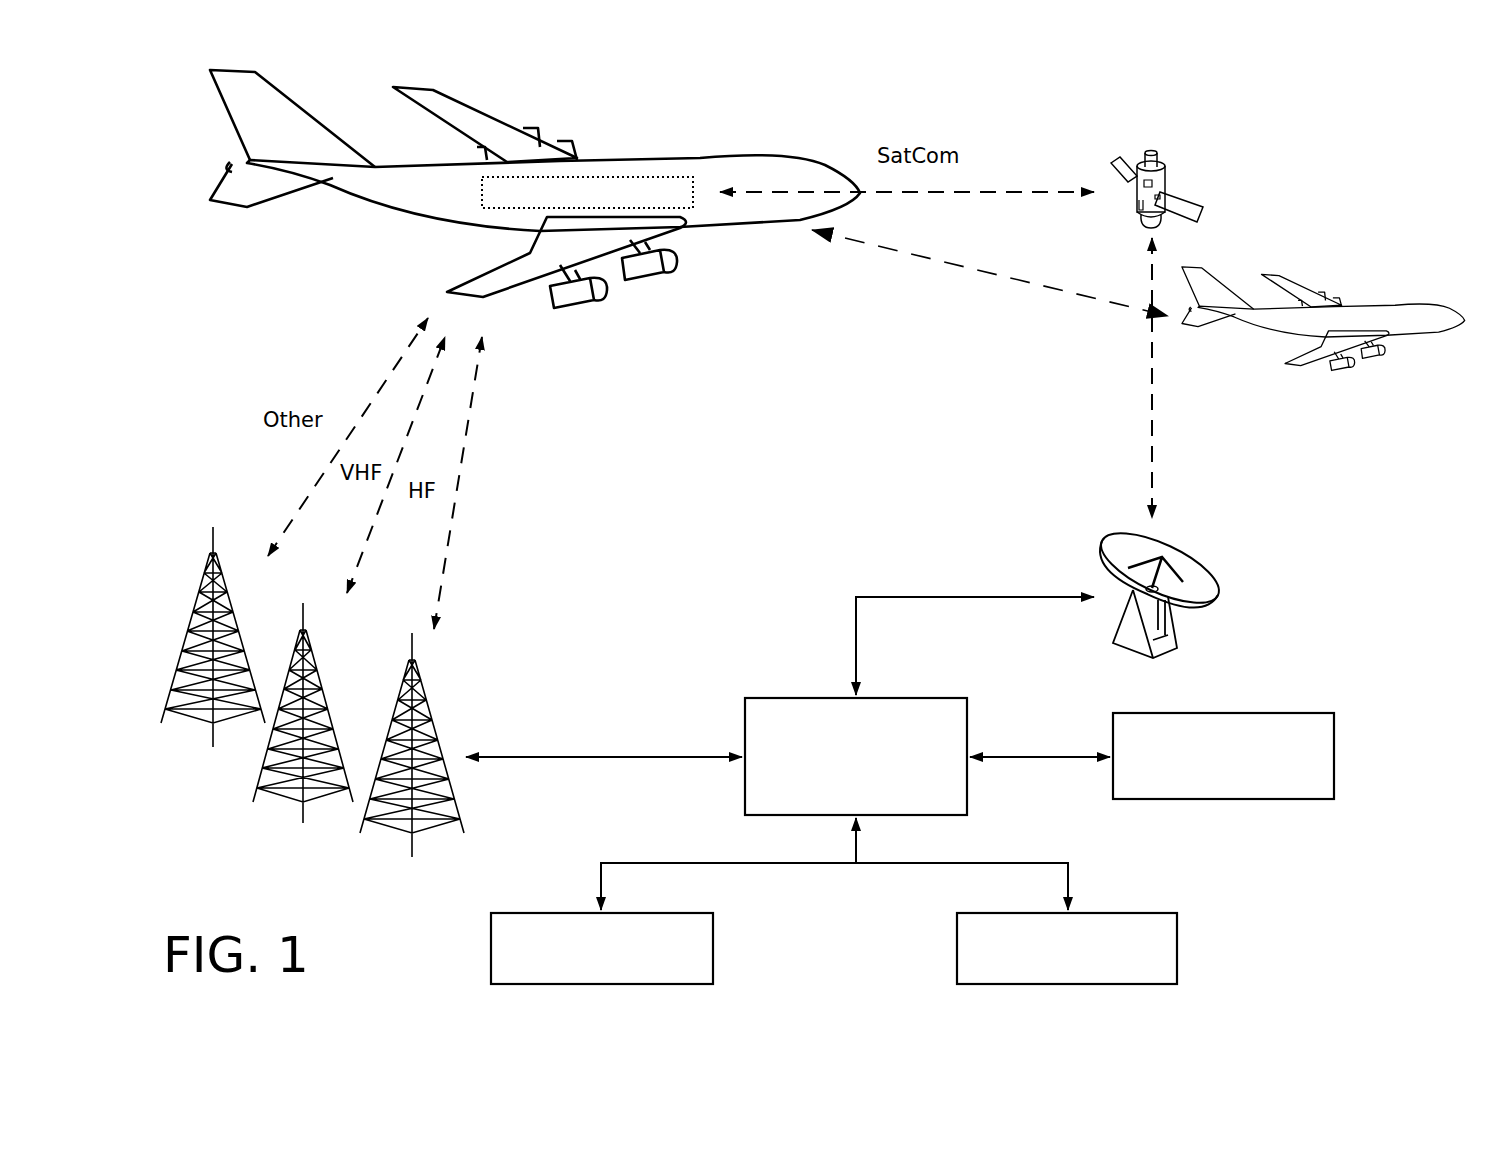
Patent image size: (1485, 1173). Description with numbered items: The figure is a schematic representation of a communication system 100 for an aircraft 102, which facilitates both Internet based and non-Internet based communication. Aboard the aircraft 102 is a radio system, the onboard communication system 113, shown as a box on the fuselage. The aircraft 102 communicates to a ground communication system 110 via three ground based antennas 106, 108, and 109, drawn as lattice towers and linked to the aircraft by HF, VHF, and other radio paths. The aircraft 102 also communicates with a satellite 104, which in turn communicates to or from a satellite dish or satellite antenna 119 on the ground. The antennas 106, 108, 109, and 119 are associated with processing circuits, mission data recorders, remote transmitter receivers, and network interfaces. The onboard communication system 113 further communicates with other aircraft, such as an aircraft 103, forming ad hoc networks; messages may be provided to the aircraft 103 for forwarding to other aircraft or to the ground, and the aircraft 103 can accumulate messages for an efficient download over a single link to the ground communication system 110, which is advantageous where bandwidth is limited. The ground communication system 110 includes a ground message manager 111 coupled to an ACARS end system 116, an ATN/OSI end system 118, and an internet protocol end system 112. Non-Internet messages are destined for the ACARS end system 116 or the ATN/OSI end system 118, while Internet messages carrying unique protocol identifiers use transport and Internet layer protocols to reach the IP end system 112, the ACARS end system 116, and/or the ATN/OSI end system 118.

The communication system 100 is at (1297, 117).
The aircraft 102 is at (808, 158).
The aircraft 103 is at (1456, 304).
The satellite 104 is at (1197, 200).
The ground based antenna 106 is at (473, 623).
The ground based antenna 108 is at (323, 645).
The ground based antenna 109 is at (140, 654).
The ground communication system 110 is at (842, 569).
The ground message manager 111 is at (905, 697).
The internet protocol (IP) end system 112 is at (1318, 712).
The onboard communication system 113 is at (613, 177).
The ACARS end system 116 is at (642, 912).
The ATN/OSI end system 118 is at (1112, 912).
The satellite antenna 119 is at (1203, 553).